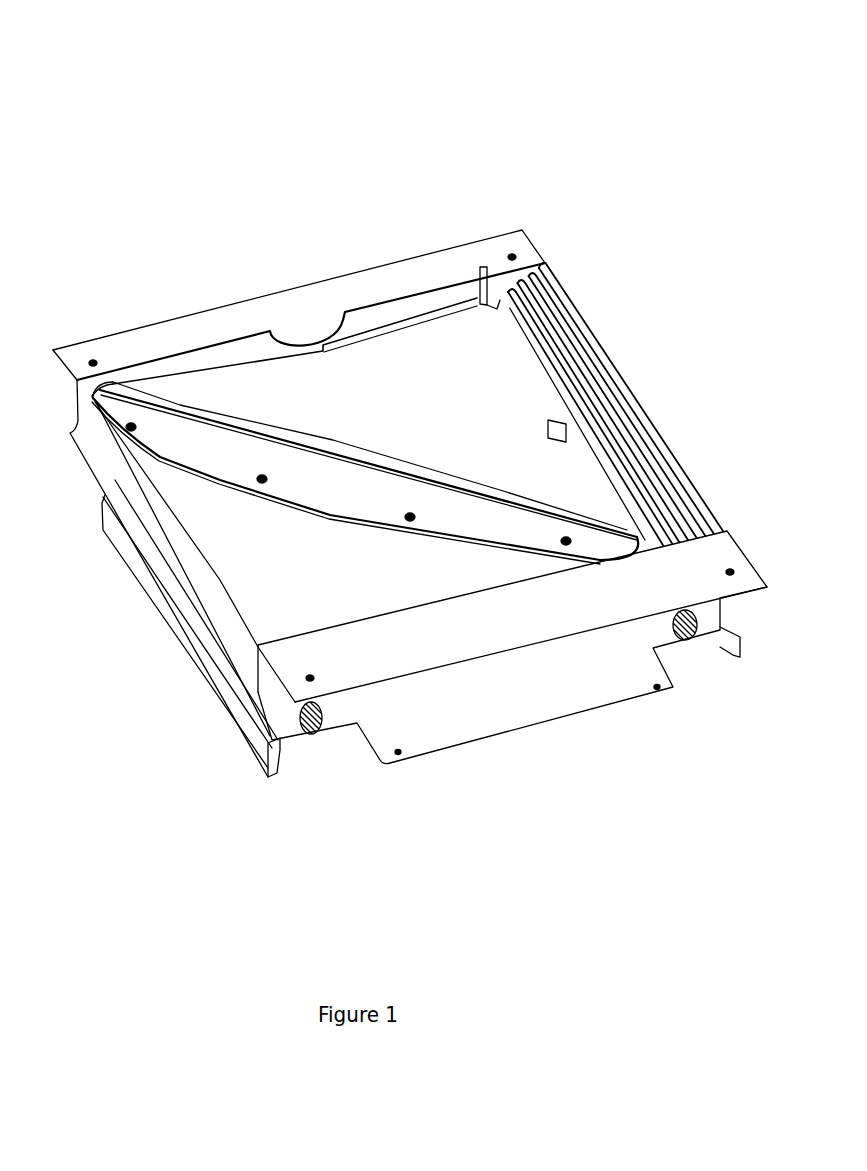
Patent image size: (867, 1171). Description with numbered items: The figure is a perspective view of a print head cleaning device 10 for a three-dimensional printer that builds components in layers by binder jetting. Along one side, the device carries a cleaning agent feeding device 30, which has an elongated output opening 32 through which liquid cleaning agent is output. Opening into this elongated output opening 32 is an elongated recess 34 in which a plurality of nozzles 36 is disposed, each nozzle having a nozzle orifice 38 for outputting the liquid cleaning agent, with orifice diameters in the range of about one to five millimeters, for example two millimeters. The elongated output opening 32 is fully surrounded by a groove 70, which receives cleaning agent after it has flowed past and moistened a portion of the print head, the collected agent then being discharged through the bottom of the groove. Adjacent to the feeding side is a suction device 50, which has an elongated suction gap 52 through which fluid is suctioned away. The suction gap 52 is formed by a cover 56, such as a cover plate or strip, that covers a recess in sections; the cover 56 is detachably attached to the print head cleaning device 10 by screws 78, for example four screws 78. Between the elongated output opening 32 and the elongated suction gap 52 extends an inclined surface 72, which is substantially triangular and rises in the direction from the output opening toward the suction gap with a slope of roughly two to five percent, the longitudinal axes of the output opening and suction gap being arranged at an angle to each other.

The print head cleaning device 10 is at (243, 128).
The cleaning agent feeding device 30 is at (548, 292).
The elongated output opening 32 is at (560, 333).
The elongated recess 34 is at (573, 370).
The nozzles 36 is at (597, 420).
The nozzle orifice 38 is at (640, 450).
The suction device 50 is at (341, 490).
The elongated suction gap 52 is at (514, 505).
The cover 56 is at (223, 437).
The groove 70 is at (486, 290).
The inclined surface 72 is at (405, 377).
The screws 78 is at (258, 497).